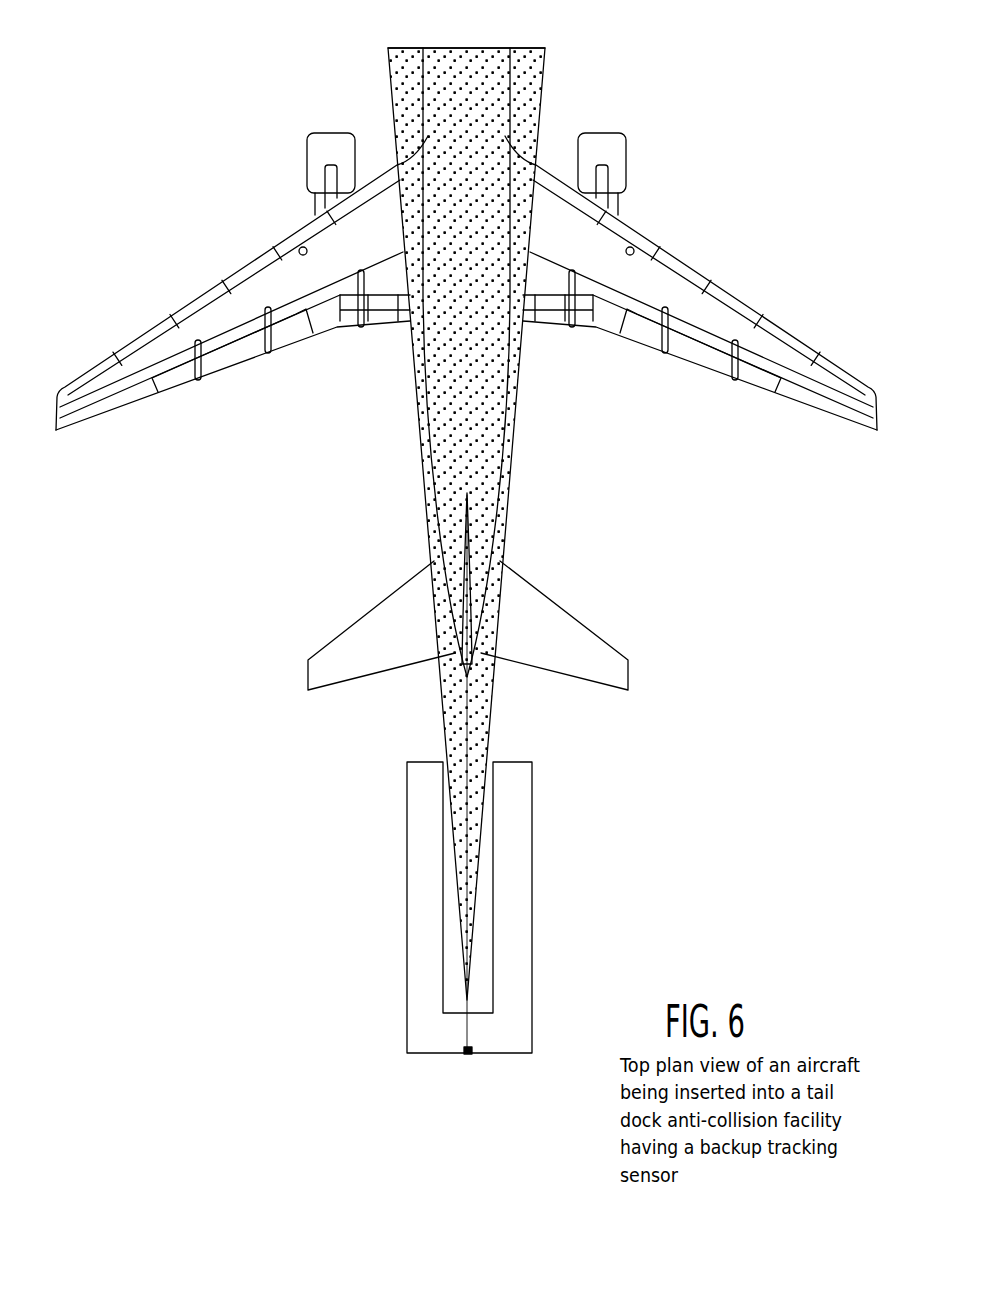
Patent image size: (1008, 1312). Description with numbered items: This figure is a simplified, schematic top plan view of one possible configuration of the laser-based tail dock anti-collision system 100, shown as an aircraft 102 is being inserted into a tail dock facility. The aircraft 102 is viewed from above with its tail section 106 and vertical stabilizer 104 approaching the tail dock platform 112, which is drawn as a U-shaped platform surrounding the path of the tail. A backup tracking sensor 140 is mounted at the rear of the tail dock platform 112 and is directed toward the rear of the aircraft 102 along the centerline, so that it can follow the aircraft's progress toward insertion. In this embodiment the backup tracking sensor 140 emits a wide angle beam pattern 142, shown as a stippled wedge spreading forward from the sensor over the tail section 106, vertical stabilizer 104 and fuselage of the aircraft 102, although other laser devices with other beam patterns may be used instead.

The laser-based tail dock anti-collision system 100 is at (306, 46).
The aircraft 102 is at (510, 368).
The vertical stabilizer 104 is at (472, 552).
The tail section 106 is at (468, 684).
The tail dock platform 112 is at (407, 842).
The backup tracking sensor 140 is at (468, 1055).
The wide angle beam pattern 142 is at (443, 700).